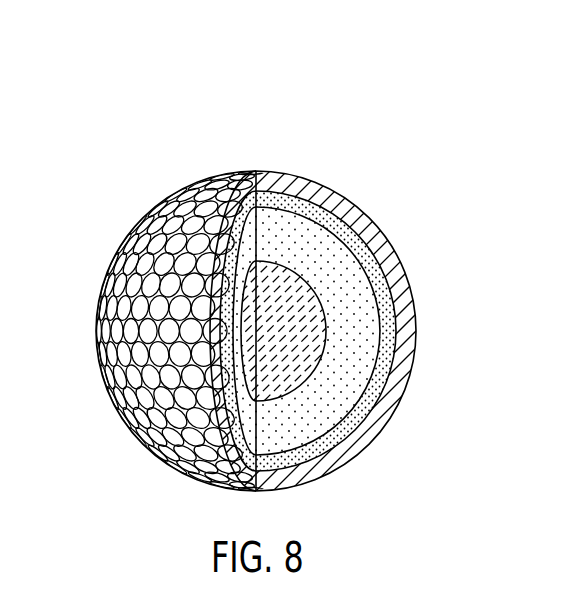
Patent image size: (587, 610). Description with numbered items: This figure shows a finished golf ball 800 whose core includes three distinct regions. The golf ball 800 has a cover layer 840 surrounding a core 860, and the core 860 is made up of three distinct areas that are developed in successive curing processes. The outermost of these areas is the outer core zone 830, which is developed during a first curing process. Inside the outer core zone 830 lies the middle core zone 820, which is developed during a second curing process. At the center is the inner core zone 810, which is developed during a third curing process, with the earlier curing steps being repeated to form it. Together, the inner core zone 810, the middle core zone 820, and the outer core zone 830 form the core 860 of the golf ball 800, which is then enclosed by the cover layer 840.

The golf ball 800 is at (164, 144).
The inner core zone 810 is at (277, 388).
The middle core zone 820 is at (372, 358).
The outer core zone 830 is at (330, 213).
The cover layer 840 is at (283, 171).
The core 860 is at (297, 187).